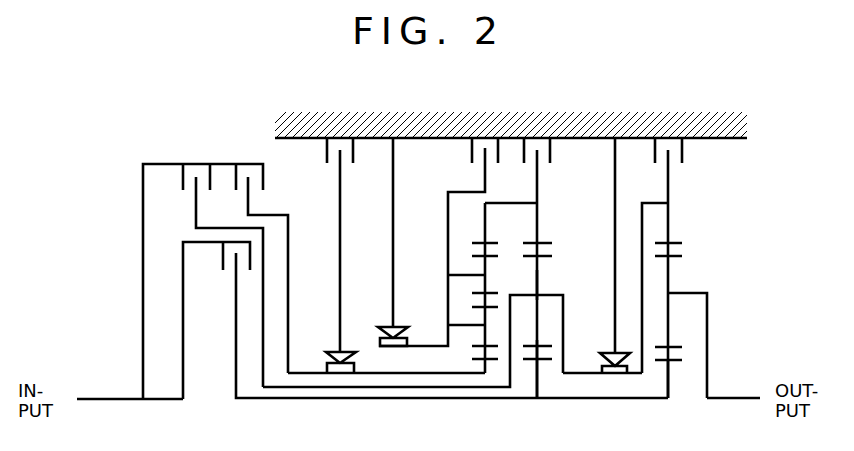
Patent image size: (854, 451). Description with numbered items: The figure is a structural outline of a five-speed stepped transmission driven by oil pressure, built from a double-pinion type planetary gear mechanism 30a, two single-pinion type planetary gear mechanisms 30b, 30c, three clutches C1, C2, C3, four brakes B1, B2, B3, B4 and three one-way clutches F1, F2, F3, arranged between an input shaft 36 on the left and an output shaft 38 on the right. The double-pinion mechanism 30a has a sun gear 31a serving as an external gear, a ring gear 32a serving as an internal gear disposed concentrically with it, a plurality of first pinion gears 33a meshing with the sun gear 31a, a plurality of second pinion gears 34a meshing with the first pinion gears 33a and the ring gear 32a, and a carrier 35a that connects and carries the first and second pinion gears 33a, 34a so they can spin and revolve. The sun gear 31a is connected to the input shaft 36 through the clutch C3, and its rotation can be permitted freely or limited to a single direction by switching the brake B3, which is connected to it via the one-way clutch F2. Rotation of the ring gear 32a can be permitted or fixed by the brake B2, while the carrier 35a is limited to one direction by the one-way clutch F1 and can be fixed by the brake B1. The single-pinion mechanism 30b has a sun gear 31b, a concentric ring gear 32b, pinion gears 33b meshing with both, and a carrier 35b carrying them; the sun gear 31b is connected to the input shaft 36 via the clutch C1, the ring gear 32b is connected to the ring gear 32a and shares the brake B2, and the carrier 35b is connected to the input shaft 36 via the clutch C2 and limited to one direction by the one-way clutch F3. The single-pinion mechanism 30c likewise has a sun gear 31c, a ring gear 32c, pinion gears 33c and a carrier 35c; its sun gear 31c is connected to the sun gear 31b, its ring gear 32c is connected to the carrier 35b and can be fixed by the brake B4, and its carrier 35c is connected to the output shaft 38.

The input shaft 36 is at (107, 397).
The output shaft 38 is at (737, 395).
The clutch C1 is at (222, 254).
The clutch C2 is at (200, 162).
The clutch C3 is at (252, 162).
The brake B1 is at (472, 152).
The brake B2 is at (550, 152).
The brake B3 is at (327, 153).
The brake B4 is at (682, 147).
The one-way clutch F1 is at (390, 326).
The one-way clutch F2 is at (334, 350).
The one-way clutch F3 is at (612, 352).
The double-pinion type planetary gear mechanism 30a is at (470, 206).
The single-pinion type planetary gear mechanism 30b is at (541, 204).
The single-pinion type planetary gear mechanism 30c is at (745, 224).
The sun gear 31a is at (478, 362).
The sun gear 31b is at (543, 360).
The sun gear 31c is at (672, 362).
The ring gear 32a is at (475, 242).
The ring gear 32b is at (545, 242).
The ring gear 32c is at (675, 240).
The first pinion gears 33a is at (480, 338).
The pinion gears 33b is at (540, 275).
The pinion gears 33c is at (670, 277).
The second pinion gears 34a is at (483, 284).
The carrier 35a is at (467, 275).
The carrier 35b is at (539, 294).
The carrier 35c is at (700, 293).